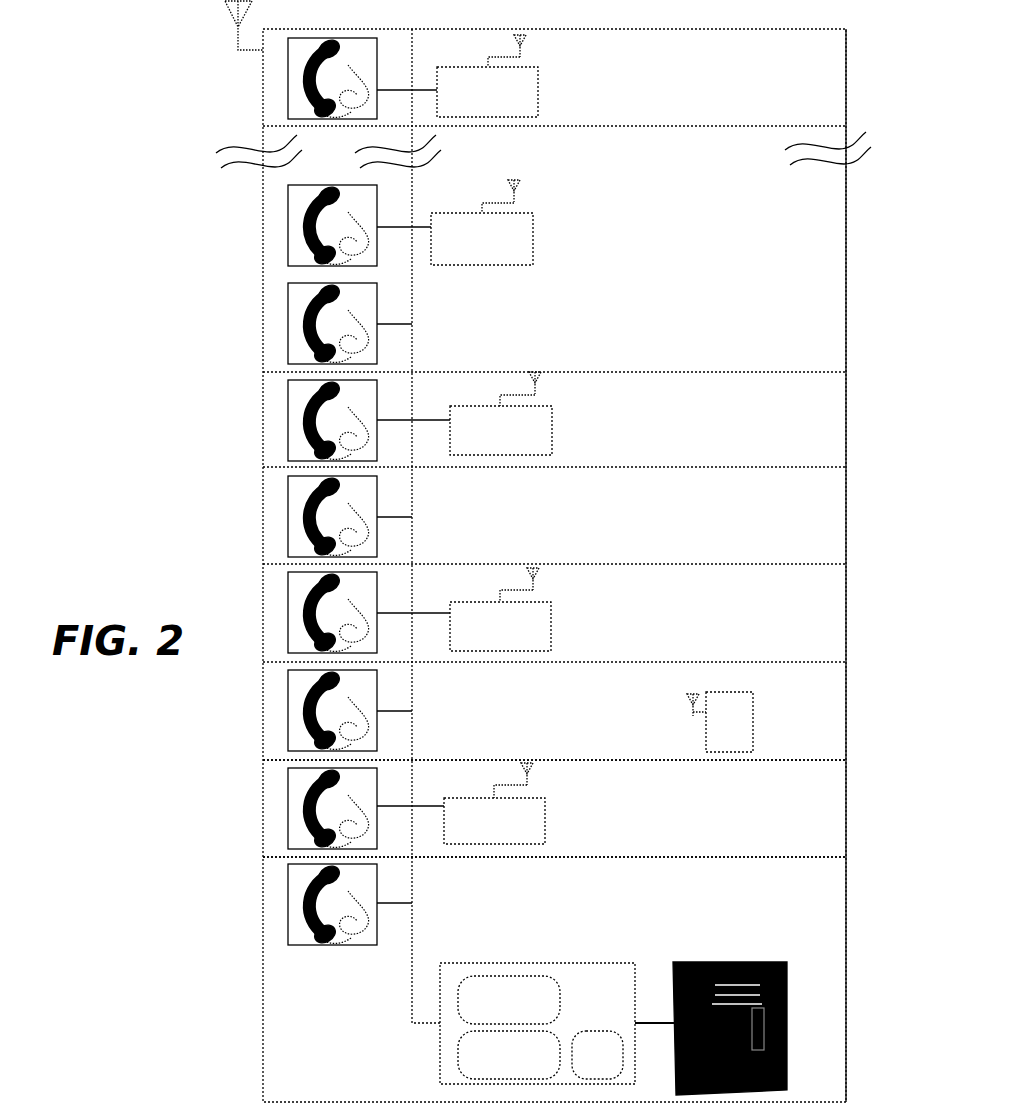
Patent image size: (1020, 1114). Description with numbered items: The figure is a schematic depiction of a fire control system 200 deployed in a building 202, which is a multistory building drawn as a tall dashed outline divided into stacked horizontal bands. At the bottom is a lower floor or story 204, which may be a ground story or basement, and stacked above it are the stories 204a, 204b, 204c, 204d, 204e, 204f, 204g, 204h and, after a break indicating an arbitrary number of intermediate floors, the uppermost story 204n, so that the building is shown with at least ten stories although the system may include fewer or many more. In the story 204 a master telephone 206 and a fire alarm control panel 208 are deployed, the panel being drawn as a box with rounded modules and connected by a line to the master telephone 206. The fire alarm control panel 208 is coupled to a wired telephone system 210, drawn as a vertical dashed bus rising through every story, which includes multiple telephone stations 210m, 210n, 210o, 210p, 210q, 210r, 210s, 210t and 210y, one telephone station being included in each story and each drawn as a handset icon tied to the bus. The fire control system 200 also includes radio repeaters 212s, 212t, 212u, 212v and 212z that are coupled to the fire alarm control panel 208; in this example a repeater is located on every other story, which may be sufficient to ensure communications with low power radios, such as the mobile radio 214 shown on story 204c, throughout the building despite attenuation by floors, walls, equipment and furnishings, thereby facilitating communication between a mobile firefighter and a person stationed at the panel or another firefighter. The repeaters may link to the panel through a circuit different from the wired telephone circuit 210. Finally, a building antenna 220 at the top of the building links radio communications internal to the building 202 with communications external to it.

The fire control system 200 is at (142, 524).
The building 202 is at (263, 1020).
The floor (story) 204 is at (263, 1070).
The story 204a is at (554, 888).
The story 204b is at (554, 791).
The story 204c is at (554, 730).
The story 204d is at (554, 632).
The story 204e is at (554, 534).
The story 204f is at (554, 437).
The story 204g is at (554, 341).
The story 204h is at (653, 224).
The story 204n is at (554, 96).
The master telephone 206 is at (785, 1027).
The fire alarm control panel 208 is at (440, 1066).
The wired telephone system 210 is at (412, 925).
The telephone station 210m is at (288, 902).
The telephone station 210n is at (288, 806).
The telephone station 210o is at (288, 718).
The telephone station 210p is at (288, 609).
The telephone station 210q is at (288, 517).
The telephone station 210r is at (288, 420).
The telephone station 210s is at (288, 324).
The telephone station 210t is at (288, 227).
The telephone station 210y is at (288, 105).
The radio repeater 212s is at (545, 820).
The radio repeater 212t is at (551, 625).
The radio repeater 212u is at (552, 418).
The radio repeater 212v is at (533, 237).
The radio repeater 212z is at (538, 90).
The mobile radio 214 is at (753, 722).
The building antenna 220 is at (234, 24).